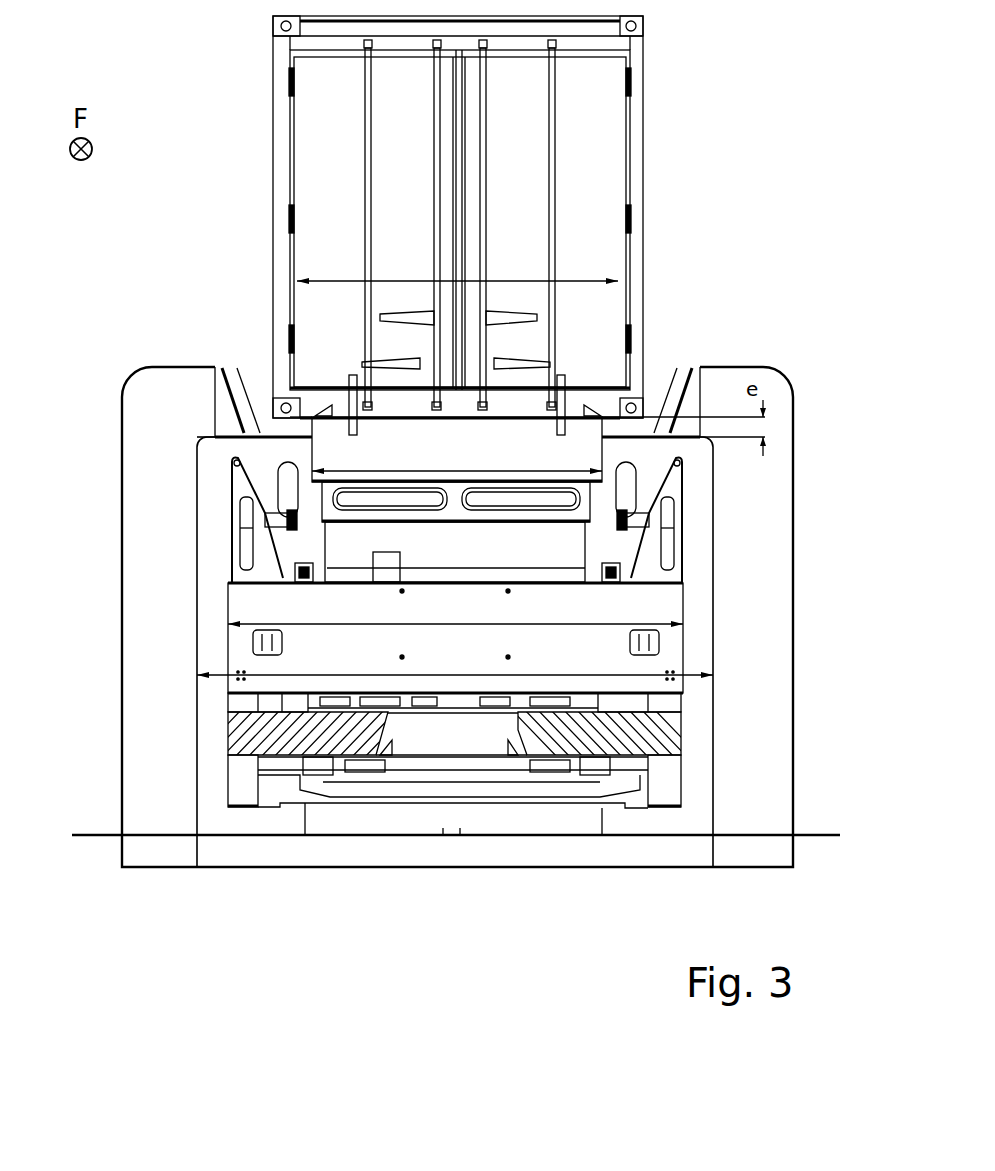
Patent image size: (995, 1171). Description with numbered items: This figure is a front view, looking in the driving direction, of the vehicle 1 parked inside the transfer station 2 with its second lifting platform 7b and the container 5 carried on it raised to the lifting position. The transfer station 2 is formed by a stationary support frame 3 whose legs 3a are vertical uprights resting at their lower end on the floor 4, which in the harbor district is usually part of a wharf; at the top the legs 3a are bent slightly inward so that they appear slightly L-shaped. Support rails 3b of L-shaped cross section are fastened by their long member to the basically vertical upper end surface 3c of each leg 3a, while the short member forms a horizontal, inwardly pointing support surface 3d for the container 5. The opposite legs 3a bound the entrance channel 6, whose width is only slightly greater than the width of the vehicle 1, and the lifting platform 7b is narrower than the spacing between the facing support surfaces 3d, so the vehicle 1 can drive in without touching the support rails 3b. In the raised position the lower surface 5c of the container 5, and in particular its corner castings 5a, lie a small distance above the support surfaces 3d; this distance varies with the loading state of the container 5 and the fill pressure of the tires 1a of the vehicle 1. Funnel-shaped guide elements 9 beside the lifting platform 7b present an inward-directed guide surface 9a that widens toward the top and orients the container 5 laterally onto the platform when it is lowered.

The vehicle 1 is at (665, 617).
The tires 1a is at (663, 827).
The transfer station 2 is at (53, 337).
The support frame 3 is at (152, 550).
The legs 3a is at (140, 715).
The support rails 3b is at (472, 369).
The upper end surface 3c is at (212, 420).
The support surface 3d is at (396, 367).
The floor 4 is at (85, 833).
The container 5 is at (613, 208).
The corner castings 5a is at (645, 26).
The lower surface 5c is at (560, 428).
The entrance channel 6 is at (692, 702).
The second lifting platform 7b is at (582, 452).
The guide elements 9 is at (675, 558).
The guide surface 9a is at (648, 520).